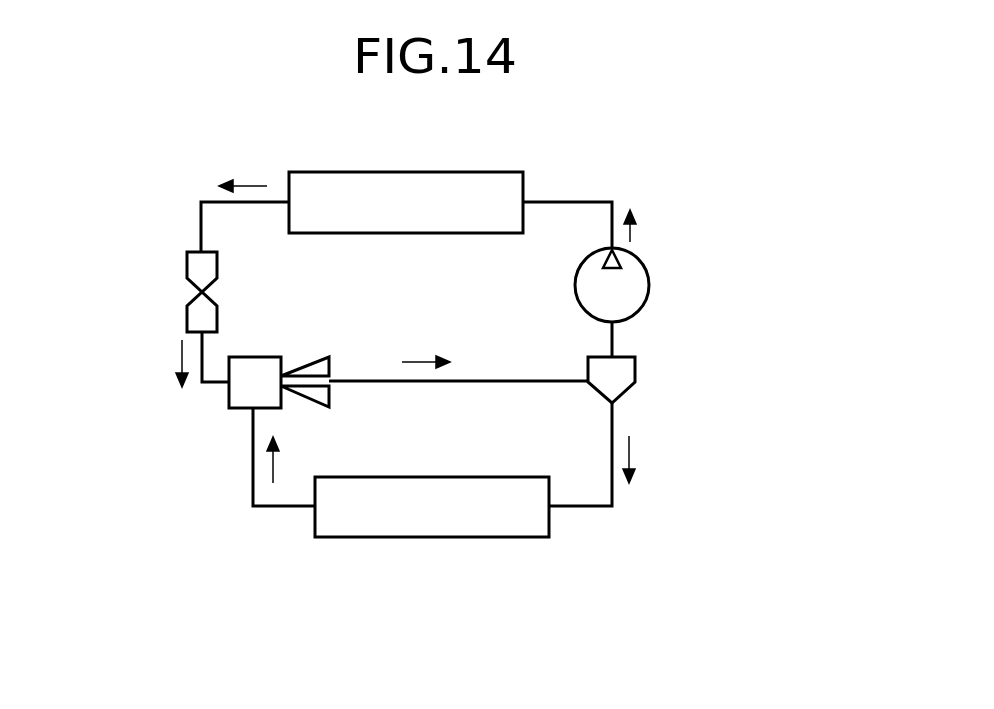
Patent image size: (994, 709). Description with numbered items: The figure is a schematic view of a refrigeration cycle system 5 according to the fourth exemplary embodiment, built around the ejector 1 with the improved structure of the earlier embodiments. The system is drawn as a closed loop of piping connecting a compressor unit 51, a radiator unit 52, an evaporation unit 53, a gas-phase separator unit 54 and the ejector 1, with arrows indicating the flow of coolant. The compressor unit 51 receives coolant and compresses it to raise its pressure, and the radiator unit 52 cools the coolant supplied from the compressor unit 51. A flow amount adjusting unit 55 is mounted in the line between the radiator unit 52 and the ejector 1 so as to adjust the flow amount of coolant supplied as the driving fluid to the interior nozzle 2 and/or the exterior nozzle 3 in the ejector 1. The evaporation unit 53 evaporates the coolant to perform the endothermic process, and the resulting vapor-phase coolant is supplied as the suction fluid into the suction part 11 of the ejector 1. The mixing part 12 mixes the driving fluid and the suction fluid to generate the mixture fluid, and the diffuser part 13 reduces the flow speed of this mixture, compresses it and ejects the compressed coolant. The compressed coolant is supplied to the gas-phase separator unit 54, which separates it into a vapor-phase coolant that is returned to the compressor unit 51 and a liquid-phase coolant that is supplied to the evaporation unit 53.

The ejector 1 is at (242, 422).
The interior nozzle 2 is at (187, 413).
The exterior nozzle 3 is at (240, 381).
The refrigeration cycle system 5 is at (620, 544).
The suction part 11 is at (187, 463).
The mixing part 12 is at (304, 367).
The diffuser part 13 is at (332, 372).
The compressor unit 51 is at (630, 280).
The radiator unit 52 is at (436, 192).
The evaporation unit 53 is at (427, 507).
The gas-phase separator unit 54 is at (610, 377).
The flow amount adjusting unit 55 is at (205, 270).